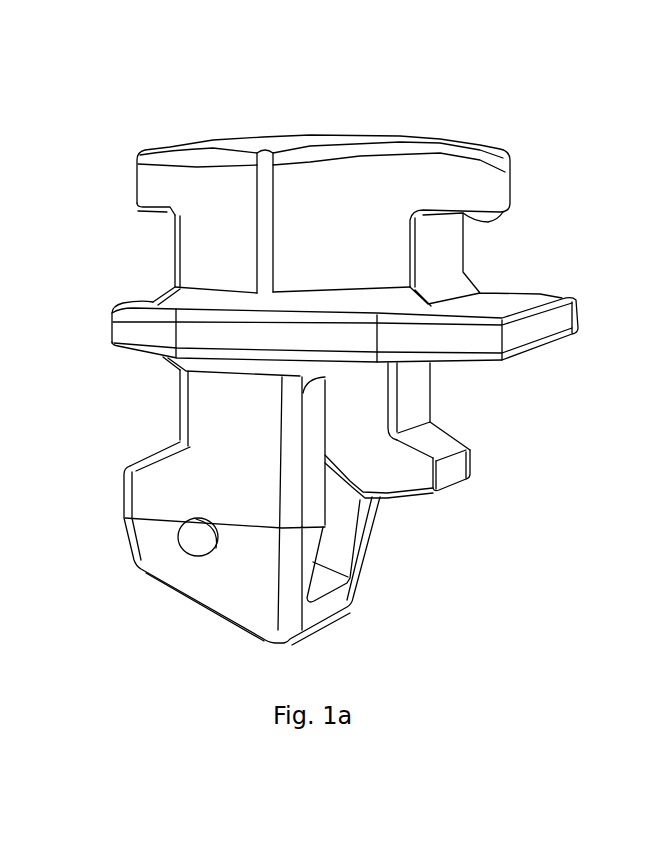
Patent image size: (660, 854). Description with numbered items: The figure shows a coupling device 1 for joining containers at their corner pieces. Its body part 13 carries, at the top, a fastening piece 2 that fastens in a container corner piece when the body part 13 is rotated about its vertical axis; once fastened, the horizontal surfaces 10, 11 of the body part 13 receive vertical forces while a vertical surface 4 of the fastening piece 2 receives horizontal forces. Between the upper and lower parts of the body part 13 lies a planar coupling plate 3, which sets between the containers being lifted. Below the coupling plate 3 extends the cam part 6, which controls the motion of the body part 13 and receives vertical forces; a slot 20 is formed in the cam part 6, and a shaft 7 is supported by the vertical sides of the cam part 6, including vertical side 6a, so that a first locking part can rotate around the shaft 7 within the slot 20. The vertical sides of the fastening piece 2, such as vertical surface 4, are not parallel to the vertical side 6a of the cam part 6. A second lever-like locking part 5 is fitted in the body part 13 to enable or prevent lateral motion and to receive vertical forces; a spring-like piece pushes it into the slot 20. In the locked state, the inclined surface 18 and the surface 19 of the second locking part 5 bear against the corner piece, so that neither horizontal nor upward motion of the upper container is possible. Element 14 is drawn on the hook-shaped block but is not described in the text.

The coupling device 1 is at (495, 103).
The fastening piece 2 is at (315, 178).
The coupling plate 3 is at (530, 298).
The vertical surface 4 is at (448, 242).
The second lever-like locking part 5 is at (414, 482).
The cam part 6 is at (175, 572).
The vertical side of cam part 6a is at (205, 468).
The shaft 7 is at (208, 537).
The horizontal surface 10 is at (482, 221).
The horizontal surface 11 is at (163, 212).
The body part 13 is at (193, 272).
The hook block 14 is at (463, 466).
The inclined surface of second locking part 18 is at (447, 432).
The surface of second locking part 19 is at (430, 395).
The slot 20 is at (334, 548).